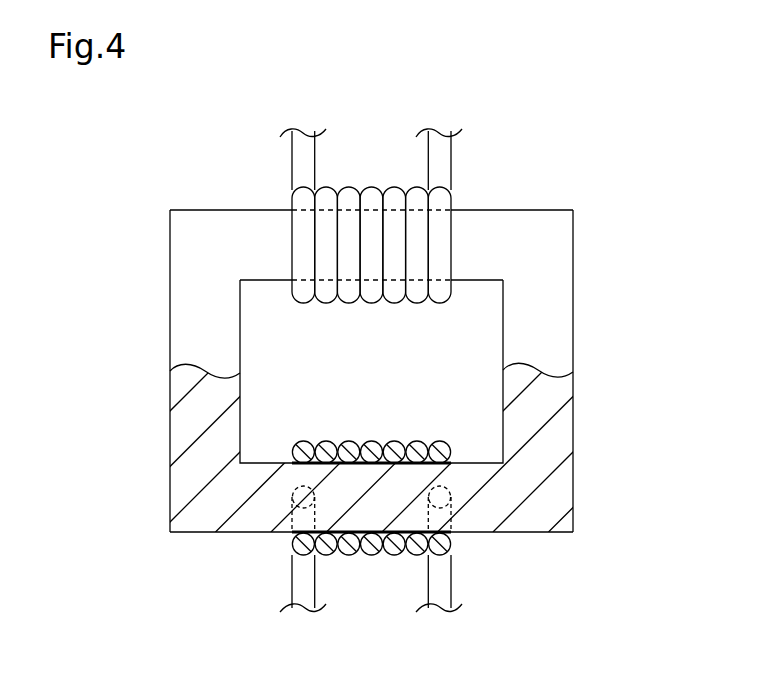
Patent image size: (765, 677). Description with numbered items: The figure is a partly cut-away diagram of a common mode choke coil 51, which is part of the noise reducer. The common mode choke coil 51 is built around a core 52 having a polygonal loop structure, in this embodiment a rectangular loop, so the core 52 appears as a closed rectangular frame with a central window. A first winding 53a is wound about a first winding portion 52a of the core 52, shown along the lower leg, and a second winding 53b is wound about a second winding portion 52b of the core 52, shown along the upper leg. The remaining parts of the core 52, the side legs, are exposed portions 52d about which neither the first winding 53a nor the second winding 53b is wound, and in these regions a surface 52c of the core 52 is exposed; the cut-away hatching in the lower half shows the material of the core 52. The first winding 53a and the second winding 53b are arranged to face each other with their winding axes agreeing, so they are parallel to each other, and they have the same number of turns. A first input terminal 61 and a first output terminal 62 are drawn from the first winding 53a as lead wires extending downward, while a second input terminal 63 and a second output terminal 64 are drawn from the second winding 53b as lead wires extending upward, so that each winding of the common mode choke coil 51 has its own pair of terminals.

The common mode choke coil 51 is at (588, 135).
The core 52 is at (584, 268).
The first winding portion 52a is at (360, 556).
The second winding portion 52b is at (371, 208).
The surface 52c is at (573, 346).
The exposed portions 52d is at (170, 351).
The first winding 53a is at (416, 441).
The second winding 53b is at (418, 305).
The first input terminal 61 is at (451, 577).
The first output terminal 62 is at (292, 574).
The second input terminal 63 is at (451, 160).
The second output terminal 64 is at (292, 159).